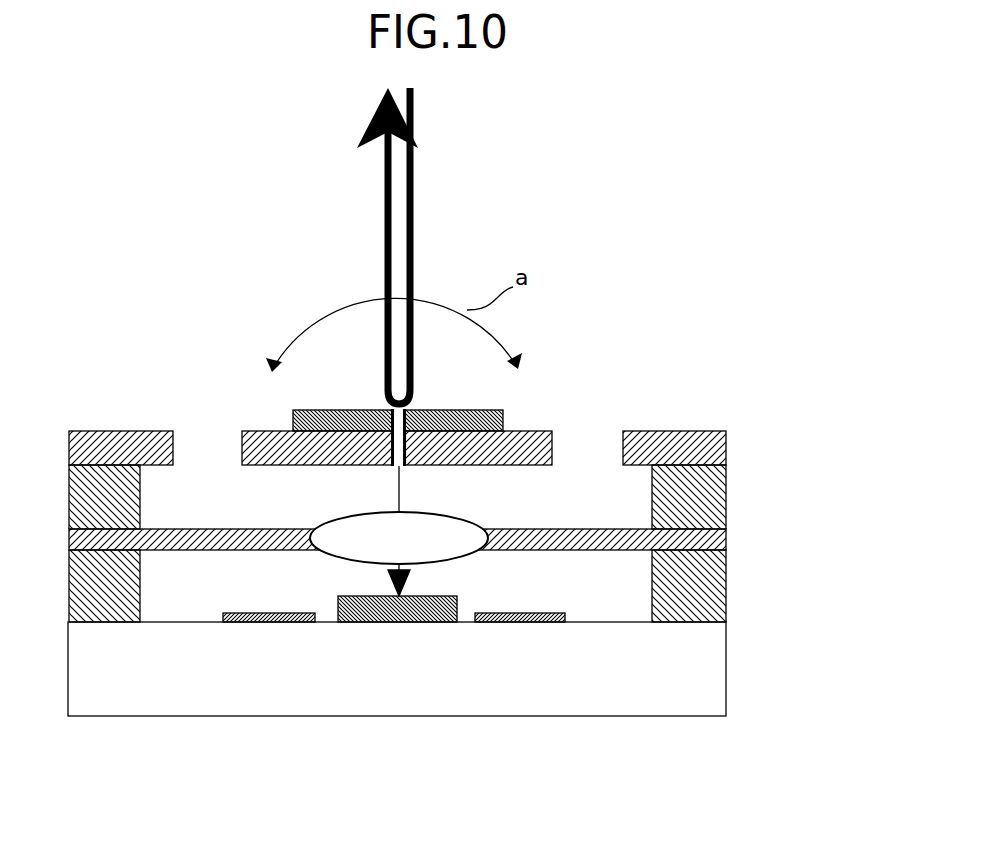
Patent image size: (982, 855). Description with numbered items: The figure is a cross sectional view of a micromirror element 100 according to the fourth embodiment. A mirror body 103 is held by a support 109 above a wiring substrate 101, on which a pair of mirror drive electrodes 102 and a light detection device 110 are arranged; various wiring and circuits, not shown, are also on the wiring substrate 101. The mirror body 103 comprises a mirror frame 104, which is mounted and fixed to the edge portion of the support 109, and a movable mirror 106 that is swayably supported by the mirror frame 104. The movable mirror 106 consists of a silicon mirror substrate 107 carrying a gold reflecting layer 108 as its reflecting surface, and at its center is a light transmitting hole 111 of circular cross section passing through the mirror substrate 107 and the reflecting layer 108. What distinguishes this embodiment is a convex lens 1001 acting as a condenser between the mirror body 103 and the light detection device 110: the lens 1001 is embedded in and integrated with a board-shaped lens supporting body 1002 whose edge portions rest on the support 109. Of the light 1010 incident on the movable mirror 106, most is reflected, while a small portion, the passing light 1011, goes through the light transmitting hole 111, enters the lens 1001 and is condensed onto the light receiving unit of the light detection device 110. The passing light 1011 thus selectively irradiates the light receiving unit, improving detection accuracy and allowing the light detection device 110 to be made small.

The micromirror element 100 is at (578, 313).
The wiring substrate 101 is at (707, 668).
The mirror drive electrodes 102 is at (518, 622).
The mirror body 103 is at (149, 290).
The mirror frame 104 is at (112, 431).
The movable mirror 106 is at (240, 310).
The mirror substrate 107 is at (250, 431).
The reflecting layer 108 is at (296, 410).
The support 109 is at (726, 568).
The light detection device 110 is at (438, 600).
The light transmitting hole 111 is at (406, 407).
The lens 1001 is at (455, 520).
The lens supporting body 1002 is at (605, 529).
The light 1010 is at (410, 197).
The passing light 1011 is at (399, 492).